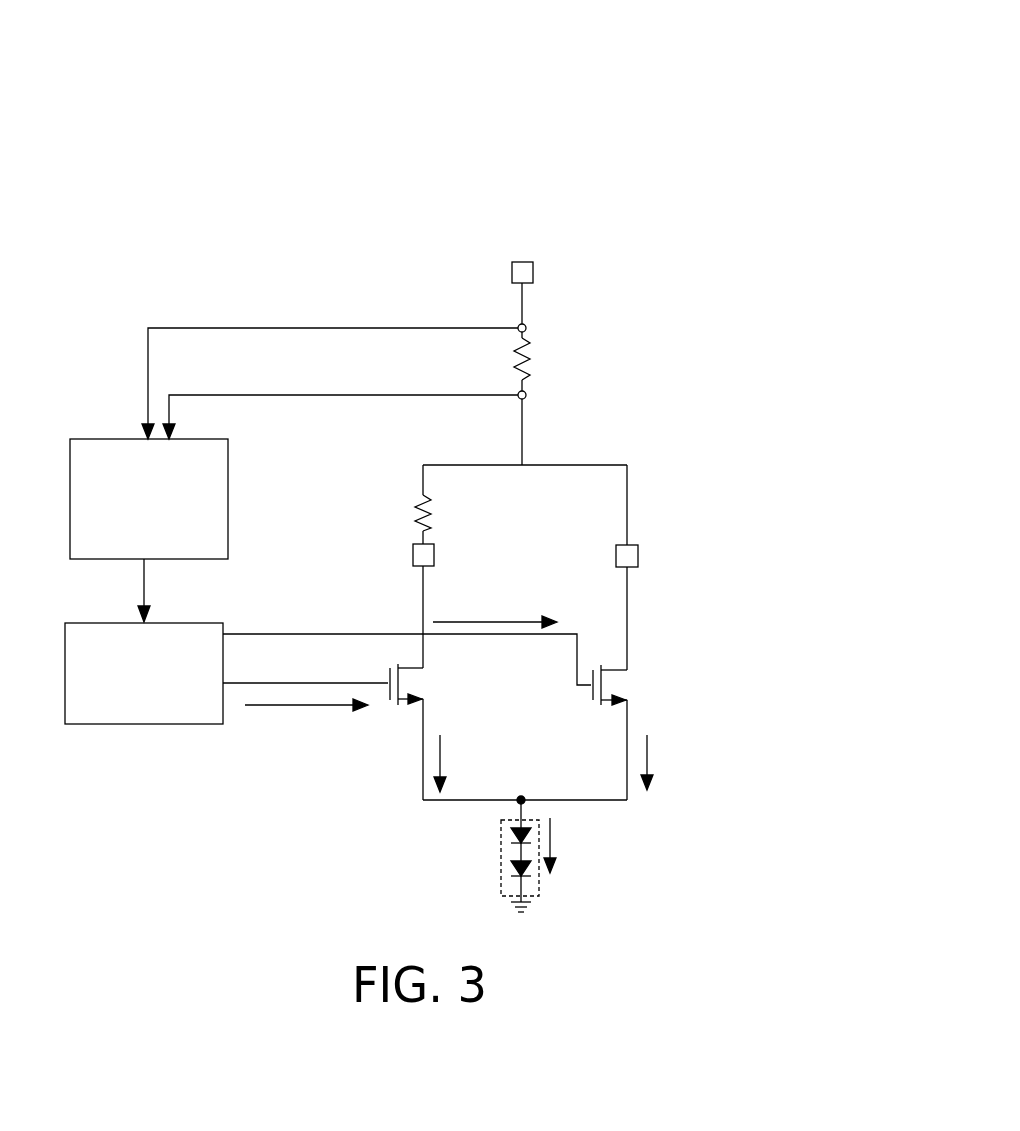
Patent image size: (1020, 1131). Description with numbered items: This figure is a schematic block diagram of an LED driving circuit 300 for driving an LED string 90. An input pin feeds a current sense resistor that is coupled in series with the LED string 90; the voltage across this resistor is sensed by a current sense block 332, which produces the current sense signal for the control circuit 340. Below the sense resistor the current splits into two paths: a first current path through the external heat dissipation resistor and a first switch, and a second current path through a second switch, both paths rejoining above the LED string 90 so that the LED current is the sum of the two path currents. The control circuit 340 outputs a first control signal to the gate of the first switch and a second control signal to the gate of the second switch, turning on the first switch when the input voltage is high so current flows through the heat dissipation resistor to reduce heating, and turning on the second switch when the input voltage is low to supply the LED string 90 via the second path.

The LED driving circuit 300 is at (863, 42).
The current sense circuit 332 is at (71, 561).
The control circuit 340 is at (130, 725).
The LED string 90 is at (501, 846).